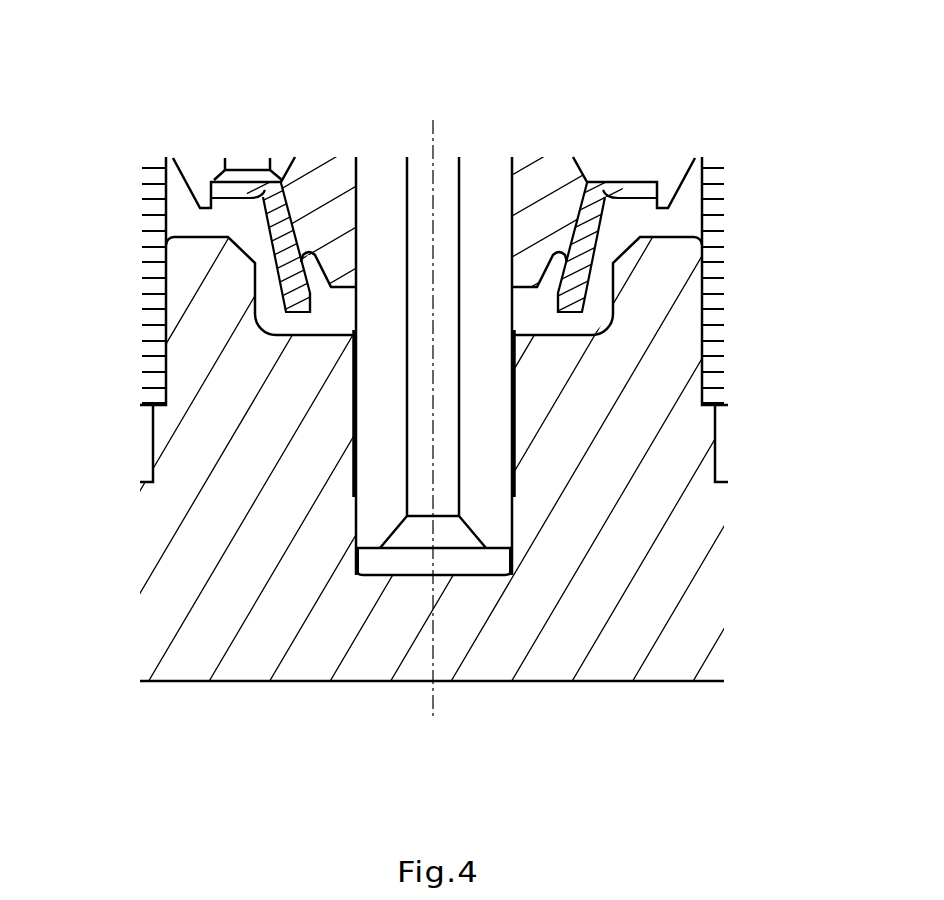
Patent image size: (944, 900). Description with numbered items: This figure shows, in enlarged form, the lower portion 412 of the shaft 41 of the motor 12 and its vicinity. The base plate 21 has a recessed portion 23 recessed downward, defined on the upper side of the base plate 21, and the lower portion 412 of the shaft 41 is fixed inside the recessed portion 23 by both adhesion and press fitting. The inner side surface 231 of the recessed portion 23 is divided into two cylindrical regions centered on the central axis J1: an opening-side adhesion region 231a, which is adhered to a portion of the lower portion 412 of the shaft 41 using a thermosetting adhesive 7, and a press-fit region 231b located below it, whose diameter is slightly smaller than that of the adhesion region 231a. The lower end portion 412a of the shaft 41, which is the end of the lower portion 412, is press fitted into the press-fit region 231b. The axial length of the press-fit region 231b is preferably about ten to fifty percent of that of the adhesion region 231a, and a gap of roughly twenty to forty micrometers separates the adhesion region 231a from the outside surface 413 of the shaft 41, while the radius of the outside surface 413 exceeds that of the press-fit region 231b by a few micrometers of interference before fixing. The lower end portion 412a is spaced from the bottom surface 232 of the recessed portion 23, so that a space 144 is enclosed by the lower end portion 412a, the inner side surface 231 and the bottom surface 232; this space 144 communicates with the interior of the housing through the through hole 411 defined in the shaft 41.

The motor 12 is at (198, 97).
The base plate 21 is at (263, 640).
The recessed portion 23 is at (357, 343).
The thermosetting adhesive 7 is at (352, 437).
The inner side surface 231 is at (357, 510).
The adhesion region 231a is at (357, 390).
The press-fit region 231b is at (358, 528).
The bottom surface 232 is at (440, 565).
The space 144 is at (475, 570).
The shaft 41 is at (490, 212).
The through hole 411 is at (448, 200).
The lower portion 412 is at (612, 183).
The lower end portion 412a is at (500, 532).
The outside surface 413 is at (681, 182).
The central axis J1 is at (435, 128).